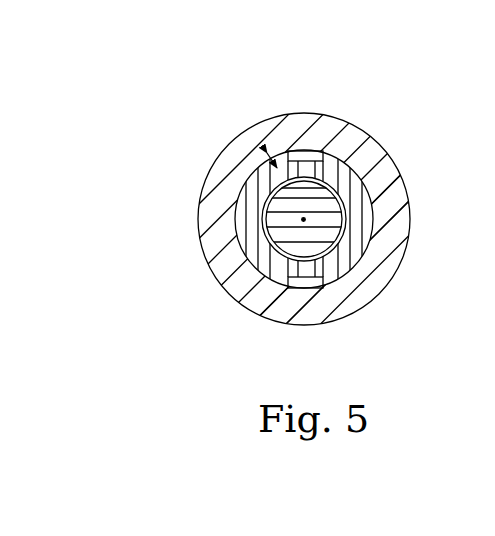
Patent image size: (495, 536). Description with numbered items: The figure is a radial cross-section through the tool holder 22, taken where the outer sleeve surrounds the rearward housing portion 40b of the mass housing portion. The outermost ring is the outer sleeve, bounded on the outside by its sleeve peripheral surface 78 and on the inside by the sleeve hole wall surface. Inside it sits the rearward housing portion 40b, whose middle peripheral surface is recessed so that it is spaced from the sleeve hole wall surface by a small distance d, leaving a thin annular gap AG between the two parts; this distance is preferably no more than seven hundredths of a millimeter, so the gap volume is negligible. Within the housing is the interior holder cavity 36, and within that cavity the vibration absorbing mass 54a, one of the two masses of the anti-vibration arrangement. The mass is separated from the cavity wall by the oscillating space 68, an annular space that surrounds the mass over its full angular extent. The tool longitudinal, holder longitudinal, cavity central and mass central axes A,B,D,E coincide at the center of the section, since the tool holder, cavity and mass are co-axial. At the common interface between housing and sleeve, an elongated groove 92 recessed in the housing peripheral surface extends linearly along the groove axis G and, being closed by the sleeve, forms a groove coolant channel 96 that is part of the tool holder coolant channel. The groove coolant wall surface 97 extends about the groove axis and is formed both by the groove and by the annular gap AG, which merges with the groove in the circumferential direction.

The tool holder 22 is at (242, 96).
The rearward housing portion 40b is at (186, 122).
The sleeve peripheral surface 78 is at (343, 117).
The tool longitudinal axis, holder longitudinal axis, cavity central axis, mass cent A,B,D,E is at (304, 219).
The vibration absorbing mass 54a is at (282, 211).
The distance d is at (271, 150).
The annular gap AG is at (238, 201).
The holder cavity 36 is at (257, 250).
The oscillating space 68 is at (343, 240).
The groove coolant wall surface 97 is at (276, 309).
The groove 92 is at (284, 304).
The groove coolant channel 96 is at (318, 301).
The groove axis G is at (310, 282).